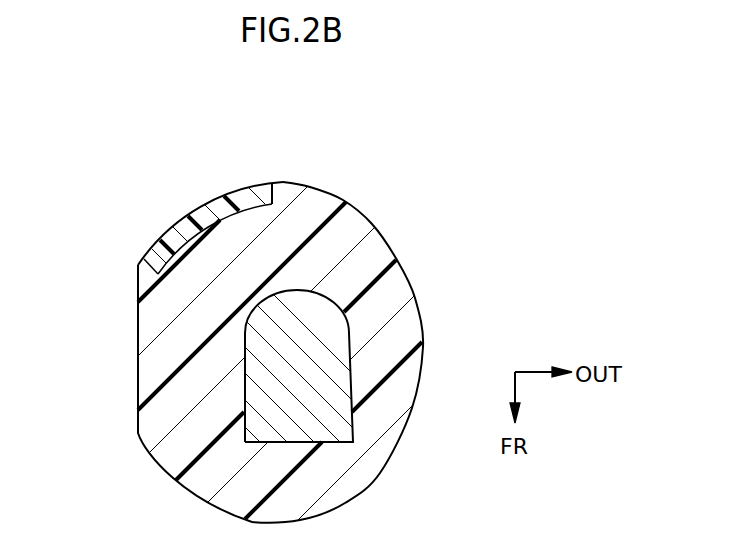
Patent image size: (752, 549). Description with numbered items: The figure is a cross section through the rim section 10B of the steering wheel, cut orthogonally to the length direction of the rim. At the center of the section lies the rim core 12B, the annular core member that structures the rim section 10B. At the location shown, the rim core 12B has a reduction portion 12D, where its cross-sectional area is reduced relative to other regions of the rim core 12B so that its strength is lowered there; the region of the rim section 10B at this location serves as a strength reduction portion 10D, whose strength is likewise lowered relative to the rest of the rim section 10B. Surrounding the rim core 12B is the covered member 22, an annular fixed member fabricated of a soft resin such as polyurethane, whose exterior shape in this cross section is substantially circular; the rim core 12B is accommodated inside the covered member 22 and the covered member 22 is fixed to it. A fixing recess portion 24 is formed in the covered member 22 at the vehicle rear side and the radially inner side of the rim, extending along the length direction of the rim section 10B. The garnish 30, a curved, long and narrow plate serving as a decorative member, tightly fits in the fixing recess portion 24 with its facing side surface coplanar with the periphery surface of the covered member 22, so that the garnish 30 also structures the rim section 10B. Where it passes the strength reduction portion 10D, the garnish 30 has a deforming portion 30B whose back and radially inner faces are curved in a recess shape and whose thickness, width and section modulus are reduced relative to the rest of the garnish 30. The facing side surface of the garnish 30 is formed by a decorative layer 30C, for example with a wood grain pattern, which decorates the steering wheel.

The rim section 10B is at (346, 202).
The strength reduction portion 10D is at (376, 474).
The rim core 12B is at (345, 313).
The reduction portion 12D is at (245, 384).
The covered member 22 is at (171, 479).
The fixing recess portion 24 is at (266, 200).
The garnish 30 is at (224, 196).
The deforming portion 30B is at (144, 259).
The decorative layer 30C is at (178, 222).